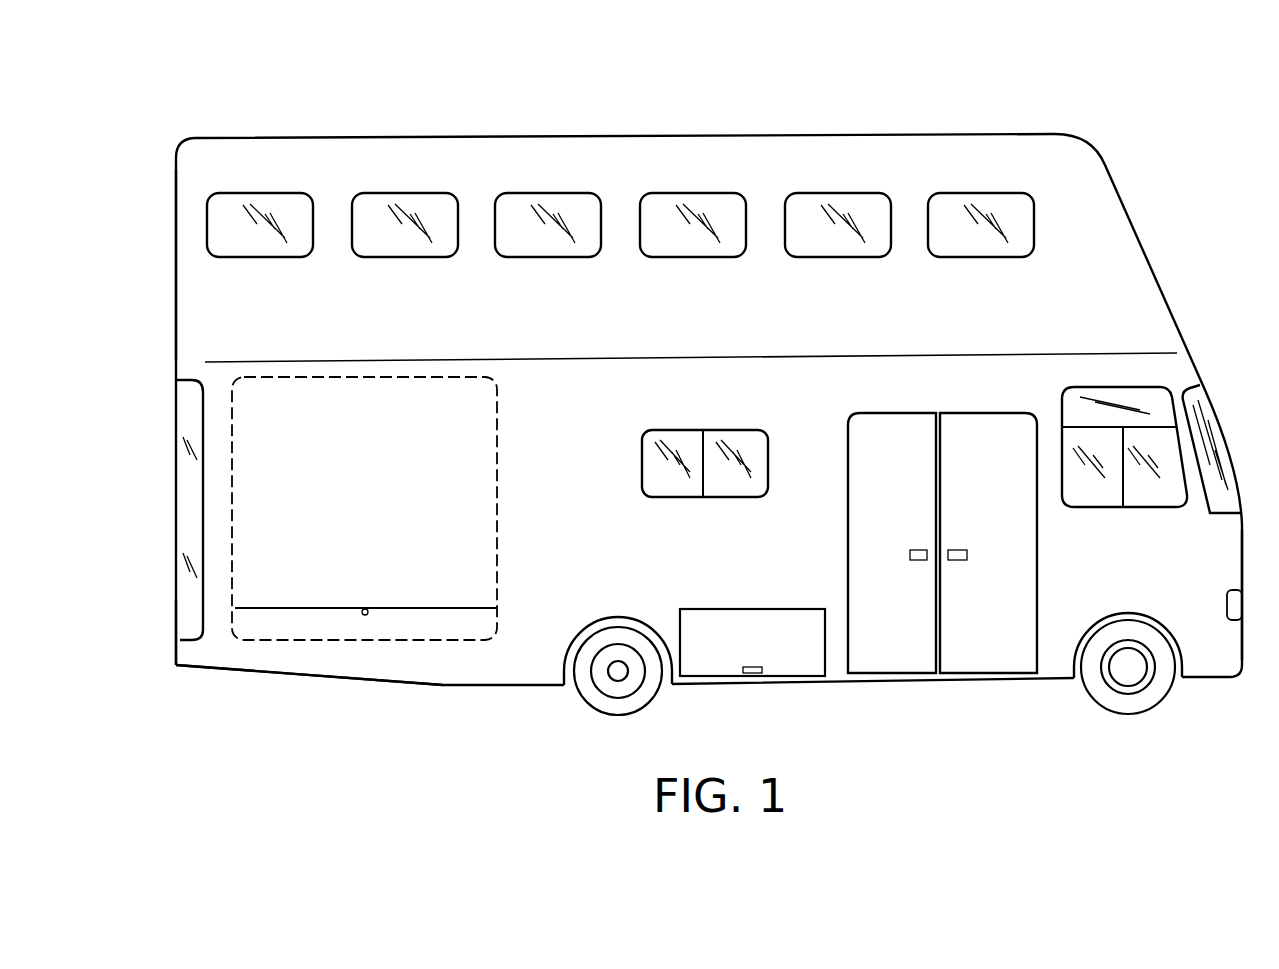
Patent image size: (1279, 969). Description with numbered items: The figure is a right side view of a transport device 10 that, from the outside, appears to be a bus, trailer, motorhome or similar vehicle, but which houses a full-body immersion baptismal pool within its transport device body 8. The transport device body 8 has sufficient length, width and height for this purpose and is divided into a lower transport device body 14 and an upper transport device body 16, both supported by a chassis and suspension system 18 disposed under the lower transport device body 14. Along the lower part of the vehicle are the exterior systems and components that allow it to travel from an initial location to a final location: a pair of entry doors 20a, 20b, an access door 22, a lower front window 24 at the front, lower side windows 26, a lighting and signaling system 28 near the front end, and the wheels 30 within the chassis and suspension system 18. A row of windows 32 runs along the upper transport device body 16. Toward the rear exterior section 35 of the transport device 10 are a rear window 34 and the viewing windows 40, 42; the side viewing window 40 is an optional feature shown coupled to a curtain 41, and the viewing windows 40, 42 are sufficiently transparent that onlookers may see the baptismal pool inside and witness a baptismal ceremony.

The transport device body 8 is at (173, 298).
The transport device 10 is at (1147, 125).
The lower transport device body 14 is at (1243, 570).
The upper transport device body 16 is at (1150, 253).
The chassis and suspension system 18 is at (670, 680).
The entry door 20a is at (898, 655).
The entry door 20b is at (997, 655).
The access door 22 is at (775, 658).
The lower front window 24 is at (1215, 420).
The lower side window 26 is at (725, 483).
The lighting and signaling system 28 is at (1240, 605).
The wheel 30 is at (602, 702).
The upper deck window 32 is at (272, 203).
The rear window 34 is at (178, 517).
The rear exterior section 35 is at (320, 678).
The side viewing window 40 is at (403, 640).
The curtain 41 is at (371, 497).
The viewing window 42 is at (175, 623).